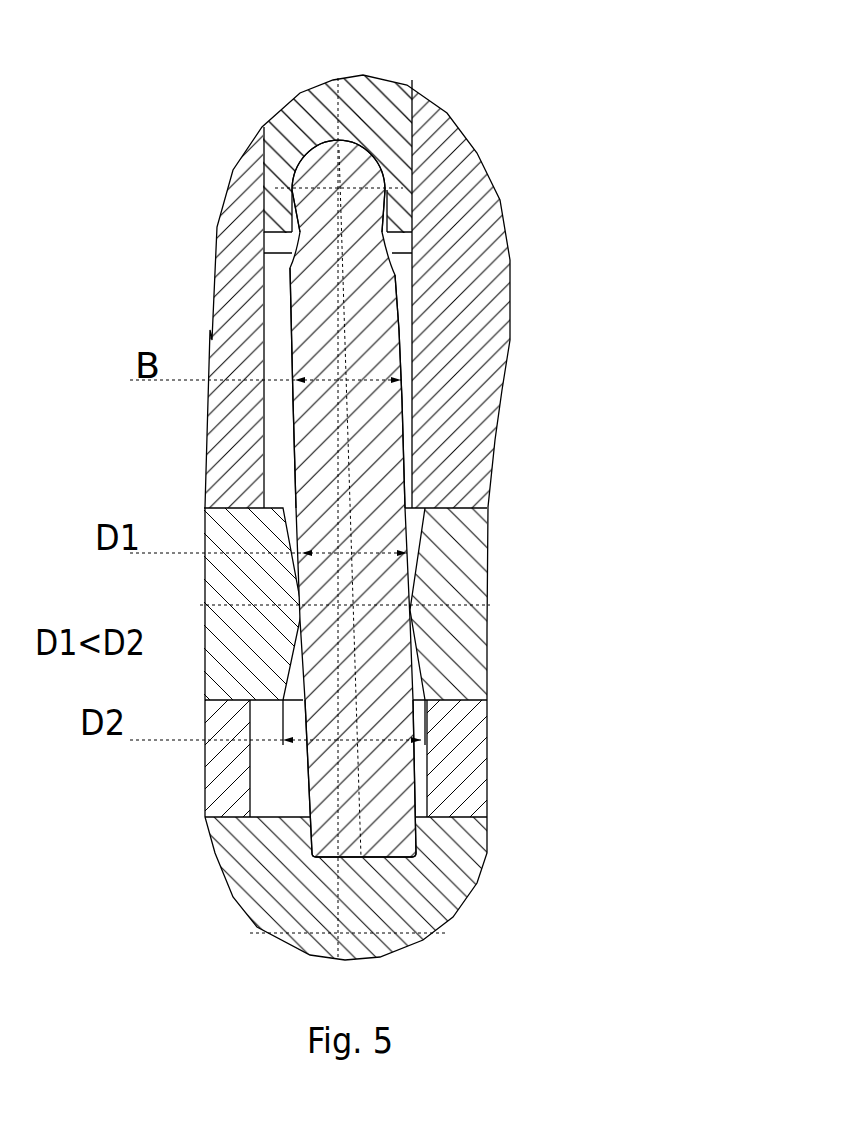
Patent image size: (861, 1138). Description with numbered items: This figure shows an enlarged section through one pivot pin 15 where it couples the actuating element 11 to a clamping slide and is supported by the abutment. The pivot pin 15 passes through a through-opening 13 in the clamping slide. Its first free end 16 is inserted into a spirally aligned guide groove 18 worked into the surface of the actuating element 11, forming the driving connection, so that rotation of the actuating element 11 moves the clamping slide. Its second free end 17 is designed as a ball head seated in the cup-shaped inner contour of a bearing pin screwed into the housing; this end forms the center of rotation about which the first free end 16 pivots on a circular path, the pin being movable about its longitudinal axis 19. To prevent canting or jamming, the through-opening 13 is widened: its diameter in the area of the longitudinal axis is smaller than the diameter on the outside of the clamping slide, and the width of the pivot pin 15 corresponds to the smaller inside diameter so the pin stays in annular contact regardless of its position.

The actuating element 11 is at (258, 928).
The through-opening 13 is at (423, 680).
The pivot pin 15 is at (383, 333).
The first free end 16 is at (393, 840).
The second free end 17 is at (365, 180).
The guide groove 18 is at (447, 870).
The longitudinal axis 19 is at (350, 478).